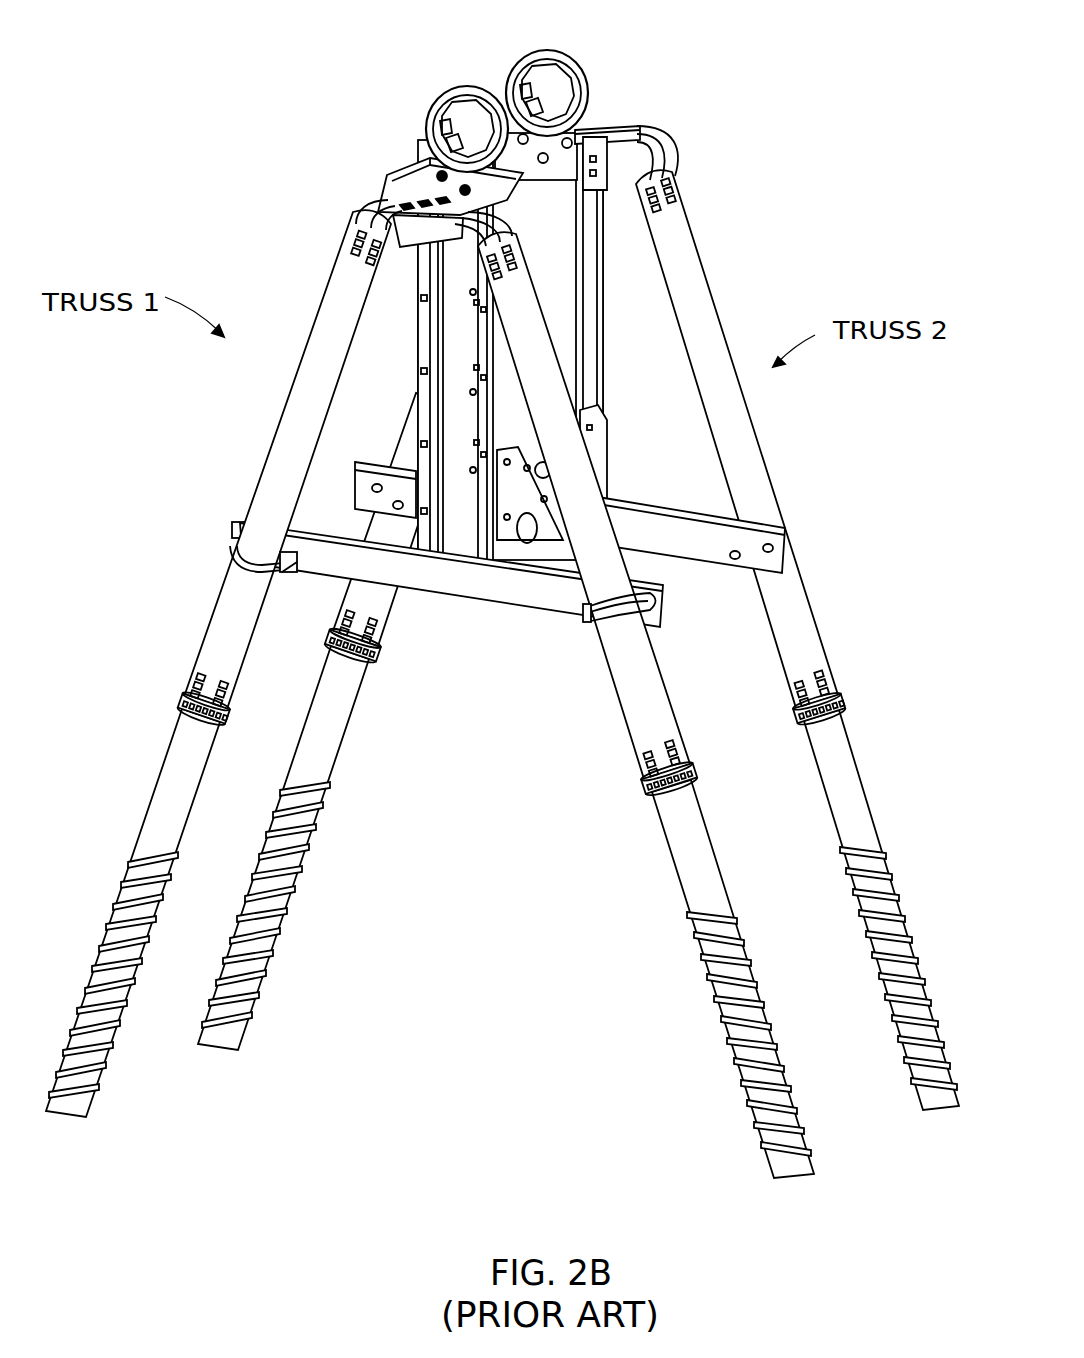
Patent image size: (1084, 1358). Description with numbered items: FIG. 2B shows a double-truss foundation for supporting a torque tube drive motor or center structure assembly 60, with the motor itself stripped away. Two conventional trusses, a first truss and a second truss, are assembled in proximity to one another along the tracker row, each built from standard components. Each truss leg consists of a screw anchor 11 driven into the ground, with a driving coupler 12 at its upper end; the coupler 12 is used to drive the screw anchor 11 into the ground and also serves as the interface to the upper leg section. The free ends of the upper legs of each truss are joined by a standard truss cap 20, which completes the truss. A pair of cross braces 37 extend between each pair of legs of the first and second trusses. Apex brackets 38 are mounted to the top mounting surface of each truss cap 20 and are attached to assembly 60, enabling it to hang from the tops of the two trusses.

The assembly 60 is at (472, 38).
The apex bracket 38 is at (403, 170).
The truss cap 20 is at (370, 195).
The cross brace 37 is at (527, 592).
The driving coupler 12 is at (840, 711).
The screw anchor 11 is at (858, 786).